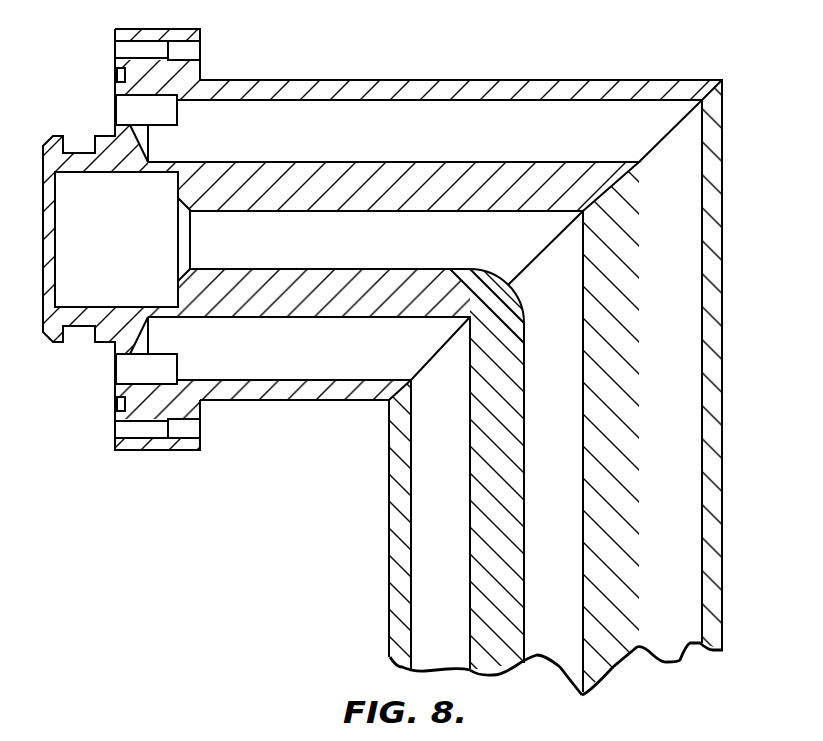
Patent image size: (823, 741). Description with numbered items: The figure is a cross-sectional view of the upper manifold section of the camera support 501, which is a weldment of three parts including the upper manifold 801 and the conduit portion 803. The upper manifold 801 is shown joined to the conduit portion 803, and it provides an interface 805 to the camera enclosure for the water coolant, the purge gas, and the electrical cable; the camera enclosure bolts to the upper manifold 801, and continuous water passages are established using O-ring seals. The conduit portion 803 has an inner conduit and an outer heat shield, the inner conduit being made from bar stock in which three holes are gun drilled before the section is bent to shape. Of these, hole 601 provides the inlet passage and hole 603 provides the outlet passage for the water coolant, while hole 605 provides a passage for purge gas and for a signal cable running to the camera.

The upper manifold 801 is at (406, 369).
The interface 805 is at (98, 114).
The camera support 501 is at (723, 359).
The conduit portion 803 is at (374, 612).
The hole 601 is at (427, 665).
The hole 605 is at (547, 658).
The hole 603 is at (657, 650).